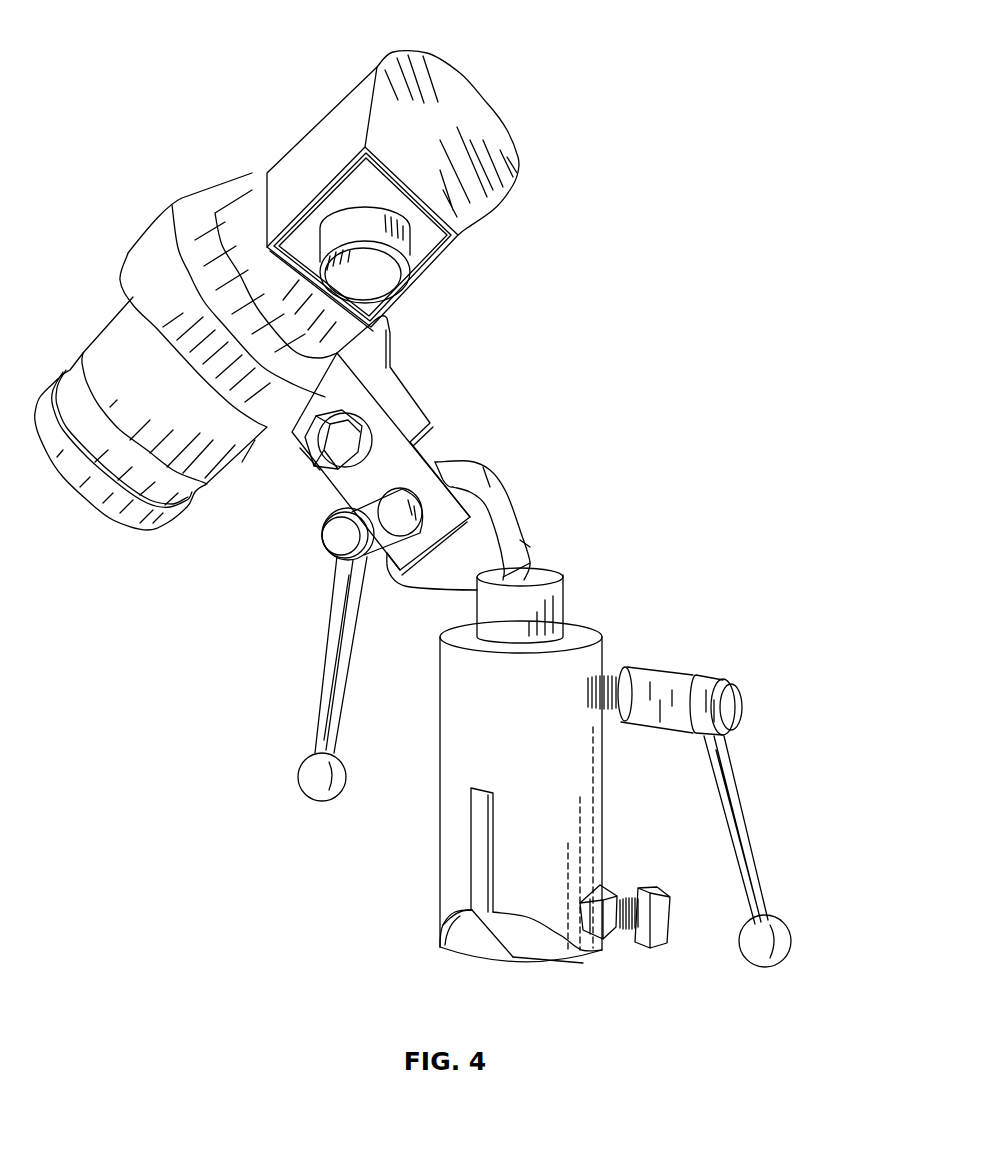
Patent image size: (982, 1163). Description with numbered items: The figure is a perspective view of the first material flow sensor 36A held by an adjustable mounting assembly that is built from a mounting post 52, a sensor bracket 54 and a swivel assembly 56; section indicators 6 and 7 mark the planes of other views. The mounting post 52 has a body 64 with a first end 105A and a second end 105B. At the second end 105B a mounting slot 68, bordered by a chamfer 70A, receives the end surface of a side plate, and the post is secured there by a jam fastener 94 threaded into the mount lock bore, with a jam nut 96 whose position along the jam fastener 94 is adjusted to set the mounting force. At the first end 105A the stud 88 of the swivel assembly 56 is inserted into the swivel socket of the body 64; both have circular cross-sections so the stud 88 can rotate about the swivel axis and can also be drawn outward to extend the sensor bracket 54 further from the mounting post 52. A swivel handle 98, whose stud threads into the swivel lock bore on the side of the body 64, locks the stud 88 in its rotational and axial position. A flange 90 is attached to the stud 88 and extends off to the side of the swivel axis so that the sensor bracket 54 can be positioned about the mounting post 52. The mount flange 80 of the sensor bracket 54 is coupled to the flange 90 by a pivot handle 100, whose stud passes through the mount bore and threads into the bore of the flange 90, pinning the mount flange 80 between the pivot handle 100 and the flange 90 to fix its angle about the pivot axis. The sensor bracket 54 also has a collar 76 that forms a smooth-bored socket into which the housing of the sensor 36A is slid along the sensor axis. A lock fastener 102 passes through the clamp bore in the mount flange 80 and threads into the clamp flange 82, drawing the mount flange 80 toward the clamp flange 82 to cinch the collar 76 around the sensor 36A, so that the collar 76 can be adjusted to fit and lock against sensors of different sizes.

The first material flow sensor 36A is at (320, 120).
The collar 76 is at (135, 257).
The sensor bracket 54 is at (366, 439).
The clamp flange 82 is at (410, 393).
The mount flange 80 is at (347, 480).
The lock fastener 102 is at (328, 445).
The pivot handle 100 is at (340, 542).
The flange 90 is at (487, 473).
The swivel assembly 56 is at (543, 520).
The stud 88 is at (570, 590).
The body 64 is at (457, 705).
The first end 105A is at (580, 627).
The mounting post 52 is at (610, 653).
The mounting slot 68 is at (480, 810).
The chamfer 70A is at (463, 937).
The second end 105B is at (537, 962).
The jam nut 96 is at (597, 943).
The jam fastener 94 is at (657, 947).
The swivel handle 98 is at (693, 668).
The section line 6 is at (825, 946).
The section line 7 is at (327, 876).